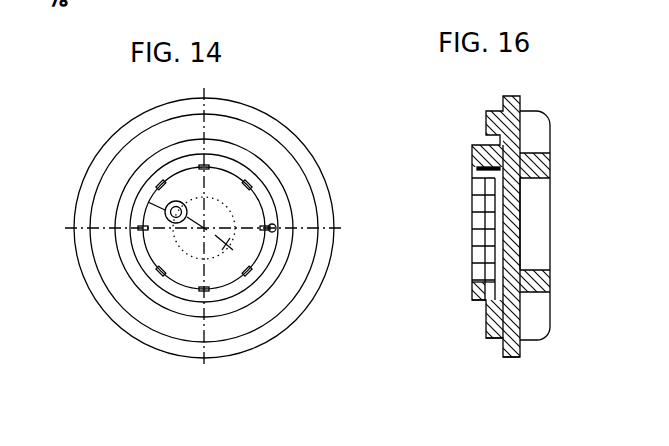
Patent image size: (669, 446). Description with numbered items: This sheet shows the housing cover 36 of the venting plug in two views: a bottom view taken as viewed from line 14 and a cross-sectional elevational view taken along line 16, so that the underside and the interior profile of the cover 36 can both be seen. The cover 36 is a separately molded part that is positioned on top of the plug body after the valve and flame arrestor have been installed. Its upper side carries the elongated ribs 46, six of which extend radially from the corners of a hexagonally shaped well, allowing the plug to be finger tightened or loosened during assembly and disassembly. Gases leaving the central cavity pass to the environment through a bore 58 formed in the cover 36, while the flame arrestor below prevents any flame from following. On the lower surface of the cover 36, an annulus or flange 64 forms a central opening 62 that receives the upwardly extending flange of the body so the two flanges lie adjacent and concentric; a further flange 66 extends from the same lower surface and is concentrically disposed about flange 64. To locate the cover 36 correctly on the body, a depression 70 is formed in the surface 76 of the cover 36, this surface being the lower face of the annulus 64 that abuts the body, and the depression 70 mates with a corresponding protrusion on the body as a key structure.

In FIG. 16, the vent plug housing cover 14 is at (523, 194).
In FIG. 14, the cross-sectional view line 16 is at (90, 165).
In FIG. 14, the housing cover 36 is at (302, 140).
In FIG. 16, the housing cover 36 is at (511, 358).
In FIG. 16, the elongated ribs 46 is at (536, 118).
In FIG. 14, the bore 58 is at (173, 205).
In FIG. 16, the bore 58 is at (540, 200).
In FIG. 14, the central opening 62 is at (237, 167).
In FIG. 16, the central opening 62 is at (480, 168).
In FIG. 14, the annulus or flange 64 is at (272, 195).
In FIG. 16, the annulus or flange 64 is at (483, 303).
In FIG. 14, the flange 66 is at (228, 332).
In FIG. 16, the flange 66 is at (487, 335).
In FIG. 14, the depression 70 is at (276, 229).
In FIG. 14, the surface 76 is at (237, 292).
In FIG. 16, the surface 76 is at (472, 292).